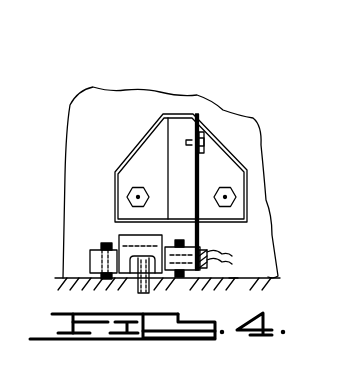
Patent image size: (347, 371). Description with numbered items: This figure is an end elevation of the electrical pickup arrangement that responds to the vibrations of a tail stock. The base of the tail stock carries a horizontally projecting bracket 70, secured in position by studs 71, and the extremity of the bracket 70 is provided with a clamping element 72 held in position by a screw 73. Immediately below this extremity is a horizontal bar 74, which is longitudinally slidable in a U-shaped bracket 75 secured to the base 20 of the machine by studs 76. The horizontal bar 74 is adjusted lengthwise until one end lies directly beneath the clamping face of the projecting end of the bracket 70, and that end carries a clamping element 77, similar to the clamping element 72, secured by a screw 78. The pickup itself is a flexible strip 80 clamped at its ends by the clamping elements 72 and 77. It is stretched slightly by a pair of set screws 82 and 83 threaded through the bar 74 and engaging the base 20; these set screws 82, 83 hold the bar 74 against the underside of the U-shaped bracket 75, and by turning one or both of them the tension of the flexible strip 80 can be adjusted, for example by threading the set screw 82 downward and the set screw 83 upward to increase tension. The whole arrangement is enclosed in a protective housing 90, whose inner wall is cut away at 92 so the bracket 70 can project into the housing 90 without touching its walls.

The base 20 is at (280, 272).
The bracket 70 is at (177, 134).
The studs 71 is at (138, 197).
The clamping element 72 is at (205, 140).
The screw 73 is at (205, 150).
The horizontal bar 74 is at (172, 272).
The U-shaped bracket 75 is at (119, 237).
The studs 76 is at (120, 277).
The clamping element 77 is at (235, 278).
The screw 78 is at (228, 261).
The flexible strip 80 is at (195, 160).
The set screw 82 is at (105, 243).
The set screw 83 is at (178, 240).
The housing 90 is at (158, 92).
The cut away 92 is at (205, 131).